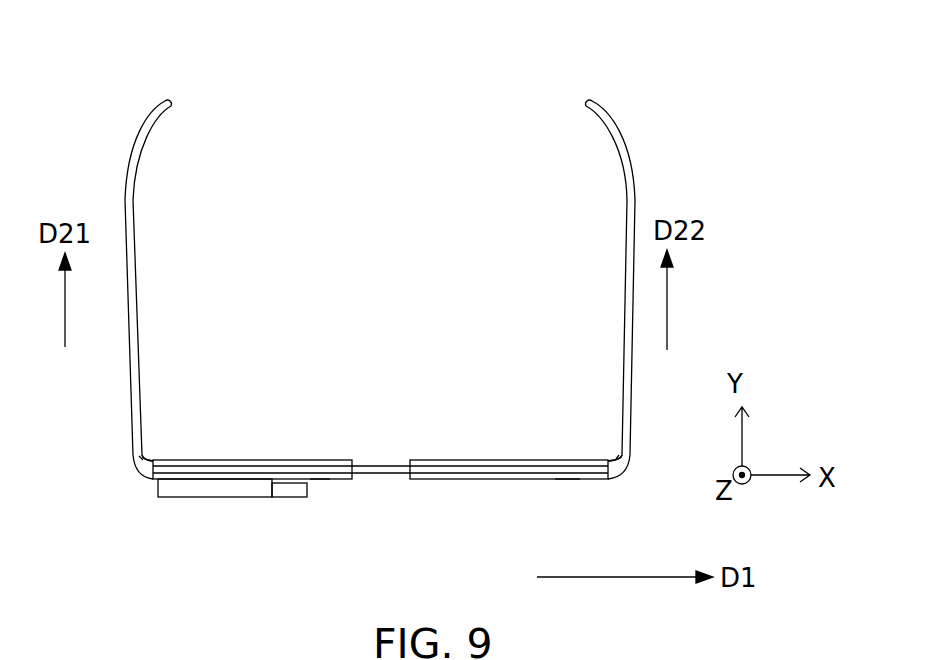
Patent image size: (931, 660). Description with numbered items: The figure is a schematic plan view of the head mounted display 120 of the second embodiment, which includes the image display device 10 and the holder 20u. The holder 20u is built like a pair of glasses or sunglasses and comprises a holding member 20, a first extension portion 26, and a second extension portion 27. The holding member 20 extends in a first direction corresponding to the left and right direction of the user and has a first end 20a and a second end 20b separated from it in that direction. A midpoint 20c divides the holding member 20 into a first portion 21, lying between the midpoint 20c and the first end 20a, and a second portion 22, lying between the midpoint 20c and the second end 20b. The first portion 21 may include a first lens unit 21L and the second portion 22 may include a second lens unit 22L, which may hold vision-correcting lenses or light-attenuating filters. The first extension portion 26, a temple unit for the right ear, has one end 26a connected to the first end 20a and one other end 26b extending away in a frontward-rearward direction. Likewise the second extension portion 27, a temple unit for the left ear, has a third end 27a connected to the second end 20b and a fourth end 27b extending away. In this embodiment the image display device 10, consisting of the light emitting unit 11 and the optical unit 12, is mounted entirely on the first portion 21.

The image display device 10 is at (253, 570).
The light emitting unit 11 is at (190, 483).
The optical unit 12 is at (283, 491).
The holding member 20 is at (458, 540).
The first end 20a is at (140, 459).
The second end 20b is at (620, 460).
The midpoint 20c is at (378, 467).
The holder 20u is at (113, 167).
The first portion 21 is at (334, 476).
The first lens unit 21L is at (318, 480).
The second portion 22 is at (494, 480).
The second lens unit 22L is at (565, 480).
The first extension portion 26 is at (133, 240).
The one end 26a is at (139, 458).
The one other end 26b is at (172, 104).
The second extension portion 27 is at (627, 247).
The third end 27a is at (619, 456).
The fourth end 27b is at (588, 103).
The head mounted display 120 is at (687, 127).